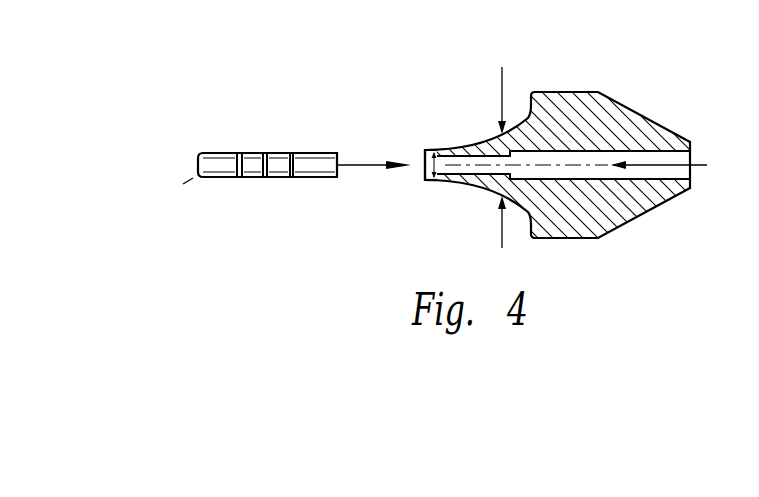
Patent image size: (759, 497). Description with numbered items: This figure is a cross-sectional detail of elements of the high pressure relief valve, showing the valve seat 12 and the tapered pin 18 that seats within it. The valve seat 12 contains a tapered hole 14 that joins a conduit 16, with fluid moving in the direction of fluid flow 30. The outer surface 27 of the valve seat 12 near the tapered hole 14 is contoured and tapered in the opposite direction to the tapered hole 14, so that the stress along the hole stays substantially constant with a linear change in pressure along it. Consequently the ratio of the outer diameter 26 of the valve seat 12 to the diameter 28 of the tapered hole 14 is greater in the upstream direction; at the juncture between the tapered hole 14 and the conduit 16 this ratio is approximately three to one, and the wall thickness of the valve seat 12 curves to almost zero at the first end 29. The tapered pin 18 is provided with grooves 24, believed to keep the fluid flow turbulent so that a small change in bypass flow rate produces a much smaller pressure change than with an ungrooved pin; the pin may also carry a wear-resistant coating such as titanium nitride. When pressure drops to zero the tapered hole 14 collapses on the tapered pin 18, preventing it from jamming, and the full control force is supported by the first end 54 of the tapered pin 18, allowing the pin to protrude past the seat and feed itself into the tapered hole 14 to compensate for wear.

The valve seat 12 is at (641, 214).
The tapered hole 14 is at (462, 147).
The conduit 16 is at (583, 162).
The tapered pin 18 is at (282, 153).
The grooves 24 is at (291, 179).
The outer diameter of the valve seat 26 is at (502, 222).
The outer surface of the valve seat 27 is at (496, 144).
The diameter of the tapered hole 28 is at (432, 152).
The first end of the valve seat 29 is at (420, 181).
The direction of fluid flow 30 is at (699, 165).
The first end of the tapered pin 54 is at (195, 177).